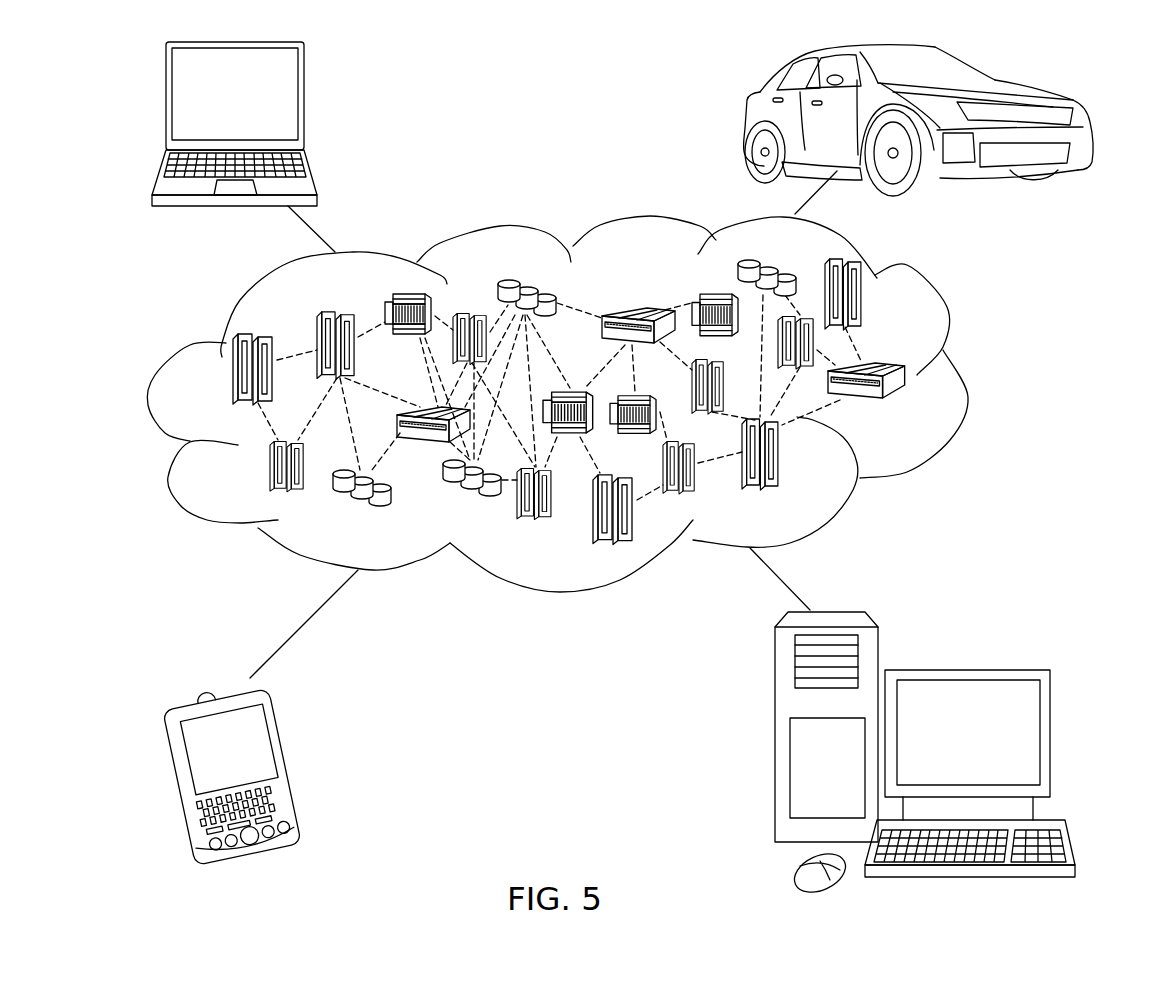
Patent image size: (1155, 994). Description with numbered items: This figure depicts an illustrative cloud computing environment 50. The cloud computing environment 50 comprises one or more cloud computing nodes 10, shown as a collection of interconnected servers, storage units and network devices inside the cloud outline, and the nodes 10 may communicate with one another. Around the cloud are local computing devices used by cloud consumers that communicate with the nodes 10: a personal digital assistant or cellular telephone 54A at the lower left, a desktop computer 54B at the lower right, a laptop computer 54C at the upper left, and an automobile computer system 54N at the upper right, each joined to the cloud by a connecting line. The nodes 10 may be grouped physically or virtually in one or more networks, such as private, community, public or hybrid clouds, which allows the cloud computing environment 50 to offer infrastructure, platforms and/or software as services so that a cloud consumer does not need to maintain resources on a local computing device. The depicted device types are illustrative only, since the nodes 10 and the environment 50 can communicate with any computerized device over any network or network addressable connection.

The cloud computing node 10 is at (907, 408).
The cloud computing environment 50 is at (967, 377).
The personal digital assistant or cellular telephone 54A is at (293, 762).
The desktop computer 54B is at (965, 670).
The laptop computer 54C is at (304, 103).
The automobile computer system 54N is at (746, 118).